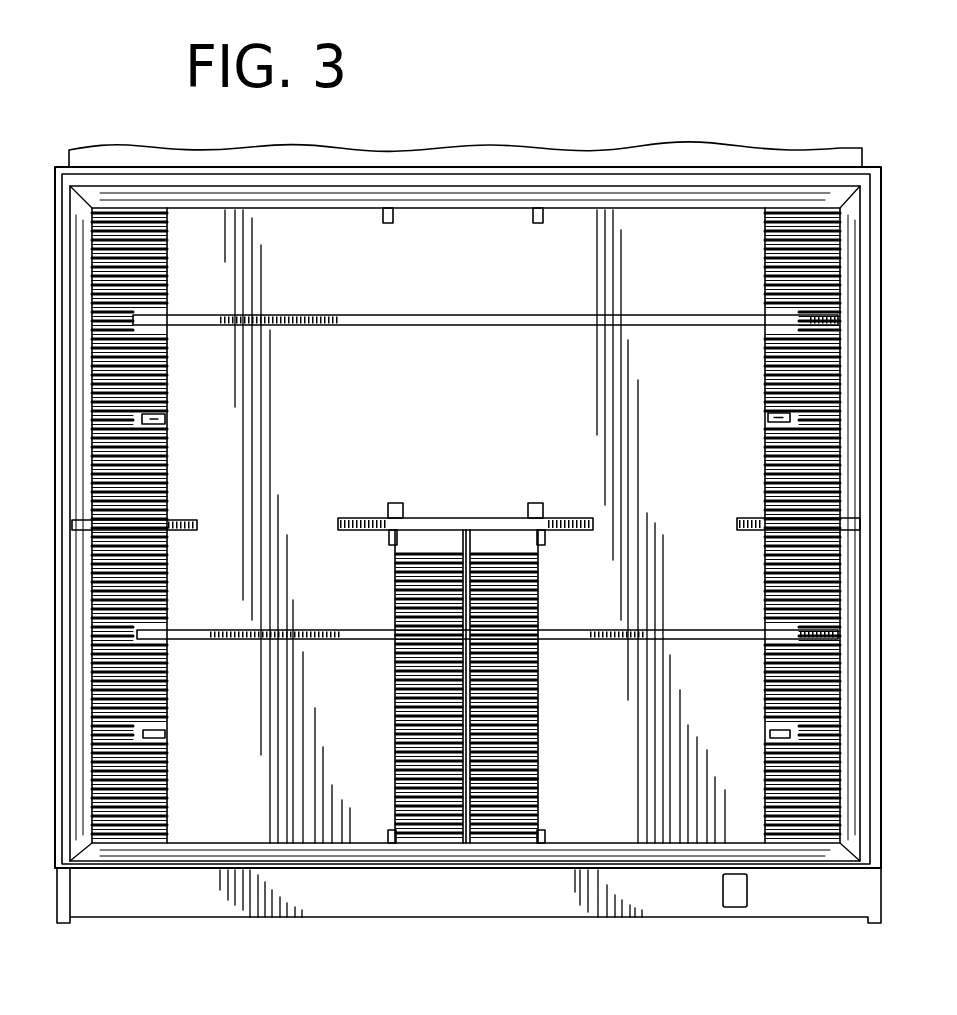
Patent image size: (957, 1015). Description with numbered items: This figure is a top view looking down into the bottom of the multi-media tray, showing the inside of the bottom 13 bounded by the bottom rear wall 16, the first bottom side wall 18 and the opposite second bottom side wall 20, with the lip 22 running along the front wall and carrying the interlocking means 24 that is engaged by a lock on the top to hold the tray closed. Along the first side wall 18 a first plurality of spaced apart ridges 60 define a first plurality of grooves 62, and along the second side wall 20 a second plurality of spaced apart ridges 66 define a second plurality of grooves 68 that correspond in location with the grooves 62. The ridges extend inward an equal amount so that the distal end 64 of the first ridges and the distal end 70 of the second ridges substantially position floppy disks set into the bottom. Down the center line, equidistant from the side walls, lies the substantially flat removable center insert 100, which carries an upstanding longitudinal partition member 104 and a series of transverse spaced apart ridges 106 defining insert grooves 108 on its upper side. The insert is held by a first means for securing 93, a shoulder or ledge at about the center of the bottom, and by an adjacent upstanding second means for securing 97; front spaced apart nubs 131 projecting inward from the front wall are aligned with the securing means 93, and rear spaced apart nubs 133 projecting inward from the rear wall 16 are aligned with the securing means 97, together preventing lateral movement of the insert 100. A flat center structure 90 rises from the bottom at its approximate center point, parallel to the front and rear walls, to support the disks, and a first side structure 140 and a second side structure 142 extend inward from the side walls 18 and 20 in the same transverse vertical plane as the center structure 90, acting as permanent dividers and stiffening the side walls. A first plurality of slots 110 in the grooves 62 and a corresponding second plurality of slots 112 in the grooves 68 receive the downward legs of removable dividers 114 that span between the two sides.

The inside of the bottom 13 is at (344, 397).
The bottom rear wall 16 is at (523, 173).
The first bottom side wall 18 is at (880, 200).
The second bottom side wall 20 is at (54, 222).
The lip 22 is at (548, 897).
The interlocking means 24 is at (733, 893).
The first plurality of spaced apart ridges 60 is at (765, 655).
The first plurality of grooves 62 is at (766, 708).
The distal end of the first ridges 64 is at (753, 525).
The second plurality of spaced apart ridges 66 is at (167, 672).
The second plurality of grooves 68 is at (167, 760).
The distal end of the second ridges 70 is at (167, 525).
The center structure 90 is at (440, 518).
The first means for securing 93 is at (389, 540).
The second means for securing 97 is at (390, 505).
The center insert 100 is at (545, 682).
The partition member 104 is at (472, 686).
The transverse spaced apart ridges 106 is at (538, 728).
The insert grooves 108 is at (528, 777).
The first plurality of slots 110 is at (768, 418).
The second plurality of slots 112 is at (165, 418).
The divider 114 is at (440, 315).
The front spaced apart nubs 131 is at (390, 835).
The rear spaced apart nubs 133 is at (383, 215).
The first side structure 140 is at (762, 520).
The second side structure 142 is at (160, 520).